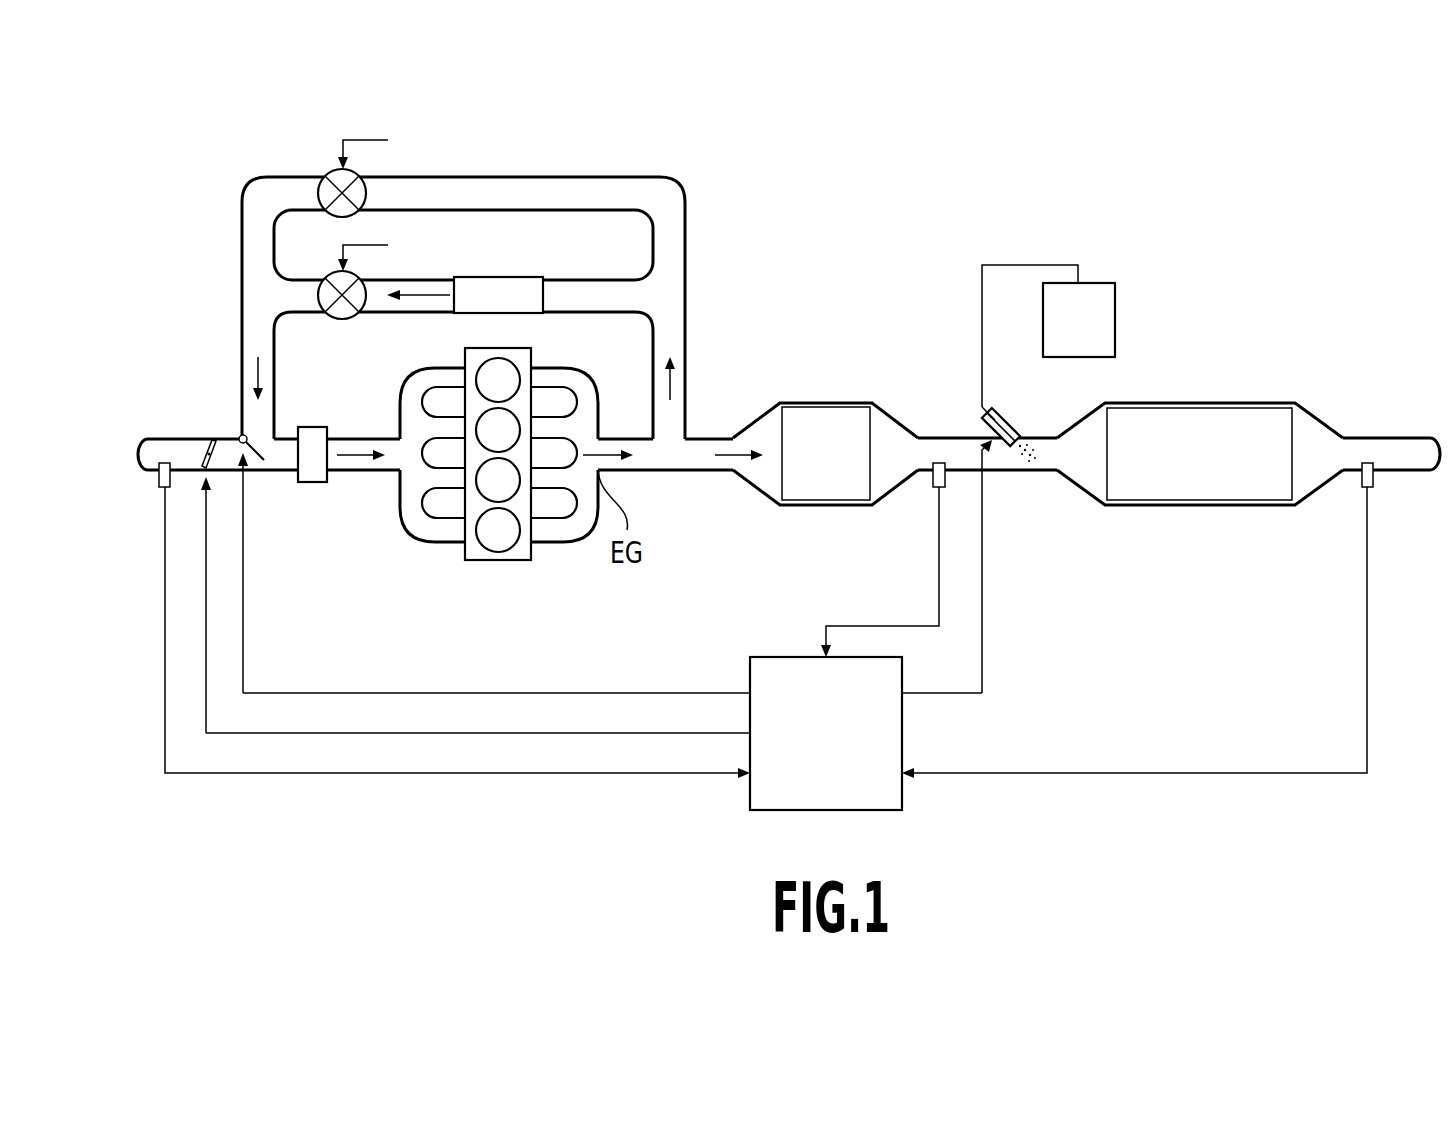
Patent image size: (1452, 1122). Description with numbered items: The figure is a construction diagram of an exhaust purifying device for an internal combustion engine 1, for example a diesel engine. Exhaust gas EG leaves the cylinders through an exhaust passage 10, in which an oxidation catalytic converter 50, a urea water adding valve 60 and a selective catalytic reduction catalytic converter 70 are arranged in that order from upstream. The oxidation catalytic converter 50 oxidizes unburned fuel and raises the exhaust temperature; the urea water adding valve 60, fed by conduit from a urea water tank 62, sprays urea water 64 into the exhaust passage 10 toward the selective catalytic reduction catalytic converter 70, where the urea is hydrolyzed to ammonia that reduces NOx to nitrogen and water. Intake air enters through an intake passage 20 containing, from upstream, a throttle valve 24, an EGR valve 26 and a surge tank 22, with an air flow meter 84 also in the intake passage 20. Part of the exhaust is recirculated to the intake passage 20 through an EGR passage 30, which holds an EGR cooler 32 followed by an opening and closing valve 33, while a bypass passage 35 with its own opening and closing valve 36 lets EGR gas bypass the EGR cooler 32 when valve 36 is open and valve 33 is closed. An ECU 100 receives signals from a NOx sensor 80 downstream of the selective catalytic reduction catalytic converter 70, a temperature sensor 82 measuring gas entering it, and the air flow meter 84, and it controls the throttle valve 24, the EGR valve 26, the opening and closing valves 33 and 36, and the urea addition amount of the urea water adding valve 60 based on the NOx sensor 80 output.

The internal combustion engine 1 is at (546, 580).
The exhaust passage 10 is at (665, 457).
The intake passage 20 is at (362, 470).
The surge tank 22 is at (312, 482).
The throttle valve 24 is at (212, 440).
The EGR valve 26 is at (241, 436).
The EGR passage 30 is at (588, 280).
The EGR cooler 32 is at (488, 313).
The opening and closing valve 33 is at (336, 320).
The bypass passage 35 is at (585, 177).
The opening and closing valve 36 is at (338, 171).
The oxidation catalytic converter 50 is at (810, 420).
The urea water adding valve 60 is at (1015, 425).
The urea water tank 62 is at (1097, 283).
The urea water 64 is at (1017, 447).
The selective catalytic reduction catalytic converter 70 is at (1238, 418).
The NOx sensor 80 is at (1367, 462).
The temperature sensor 82 is at (943, 462).
The air flow meter 84 is at (162, 462).
The ECU 100 is at (792, 657).